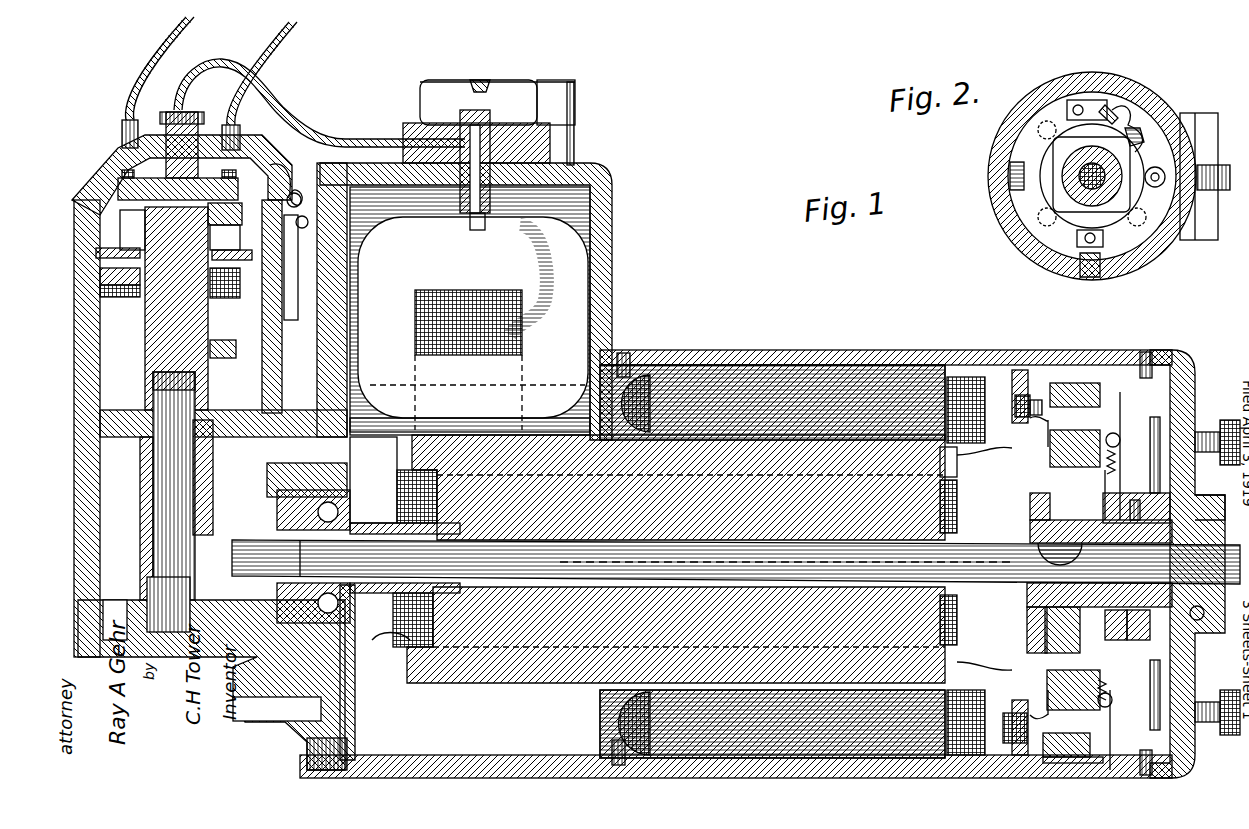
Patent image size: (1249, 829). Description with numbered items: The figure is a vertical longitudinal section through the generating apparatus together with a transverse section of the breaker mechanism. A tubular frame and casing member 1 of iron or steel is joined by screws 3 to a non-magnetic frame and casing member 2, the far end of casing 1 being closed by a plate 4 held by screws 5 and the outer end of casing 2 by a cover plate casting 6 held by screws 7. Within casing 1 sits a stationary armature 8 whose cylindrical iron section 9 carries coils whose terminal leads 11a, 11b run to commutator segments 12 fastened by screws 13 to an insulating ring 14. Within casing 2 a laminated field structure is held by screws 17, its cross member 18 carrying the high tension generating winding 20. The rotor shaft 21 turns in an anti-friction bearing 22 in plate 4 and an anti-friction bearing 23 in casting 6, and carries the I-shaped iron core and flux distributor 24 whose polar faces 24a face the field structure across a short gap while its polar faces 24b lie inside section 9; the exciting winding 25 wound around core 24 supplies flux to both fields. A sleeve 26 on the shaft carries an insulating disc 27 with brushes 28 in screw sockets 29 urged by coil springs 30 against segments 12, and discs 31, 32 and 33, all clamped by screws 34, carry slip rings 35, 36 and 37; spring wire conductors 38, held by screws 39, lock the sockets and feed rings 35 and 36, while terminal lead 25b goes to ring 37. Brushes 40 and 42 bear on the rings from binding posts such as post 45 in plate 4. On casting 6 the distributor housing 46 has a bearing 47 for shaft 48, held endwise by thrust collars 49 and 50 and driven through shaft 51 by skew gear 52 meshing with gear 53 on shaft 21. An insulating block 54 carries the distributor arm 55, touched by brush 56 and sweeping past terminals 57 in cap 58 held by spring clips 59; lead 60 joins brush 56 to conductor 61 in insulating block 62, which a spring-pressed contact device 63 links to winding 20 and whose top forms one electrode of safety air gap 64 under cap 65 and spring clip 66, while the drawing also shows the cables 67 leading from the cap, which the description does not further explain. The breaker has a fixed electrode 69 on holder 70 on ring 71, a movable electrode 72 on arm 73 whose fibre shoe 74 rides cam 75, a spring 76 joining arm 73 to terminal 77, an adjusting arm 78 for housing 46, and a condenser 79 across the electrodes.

In FIG. 1, the tubular frame and casing member 1 is at (876, 353).
In FIG. 1, the frame and casing member 2 is at (74, 192).
In FIG. 1, the screws 3 is at (624, 352).
In FIG. 1, the plate 4 is at (1180, 368).
In FIG. 1, the screws 5 is at (372, 165).
In FIG. 1, the cover plate casting 6 is at (316, 346).
In FIG. 1, the screws 7 is at (306, 755).
In FIG. 1, the stationary armature 8 is at (972, 724).
In FIG. 1, the cylindrical iron section 9 is at (738, 378).
In FIG. 1, the terminal lead 11a is at (1002, 437).
In FIG. 1, the terminal lead 11b is at (1002, 690).
In FIG. 1, the commutator segments 12 is at (1030, 392).
In FIG. 1, the screws 13 is at (1028, 410).
In FIG. 1, the ring 14 is at (1012, 737).
In FIG. 1, the screws 17 is at (394, 678).
In FIG. 1, the cross member 18 is at (414, 310).
In FIG. 1, the high tension generating winding 20 is at (470, 309).
In FIG. 1, the shaft 21 is at (266, 574).
In FIG. 1, the anti-friction bearing 22 is at (1197, 620).
In FIG. 1, the anti-friction bearing 23 is at (315, 512).
In FIG. 1, the iron core and flux distributor 24 is at (424, 688).
In FIG. 1, the polar faces 24a is at (460, 685).
In FIG. 1, the polar faces 24b is at (957, 570).
In FIG. 1, the exciting winding 25 is at (663, 577).
In FIG. 1, the terminal lead 25b is at (976, 565).
In FIG. 1, the sleeve 26 is at (715, 547).
In FIG. 1, the disc 27 is at (1073, 761).
In FIG. 1, the brushes 28 is at (1046, 694).
In FIG. 1, the screw sockets 29 is at (1118, 403).
In FIG. 1, the coil springs 30 is at (1065, 569).
In FIG. 1, the disc 31 is at (1136, 494).
In FIG. 1, the disc 32 is at (1139, 499).
In FIG. 1, the disc 33 is at (1182, 492).
In FIG. 1, the screws 34 is at (1040, 530).
In FIG. 1, the slip ring 35 is at (1112, 494).
In FIG. 1, the slip ring 36 is at (1122, 634).
In FIG. 1, the slip ring 37 is at (1143, 634).
In FIG. 1, the spring wire conductors 38 is at (1120, 430).
In FIG. 1, the screws 39 is at (1119, 572).
In FIG. 1, the brush 40 is at (1150, 686).
In FIG. 1, the brush 42 is at (1150, 464).
In FIG. 1, the terminal binding post 45 is at (1160, 442).
In FIG. 1, the housing 46 is at (270, 386).
In FIG. 2, the housing 46 is at (1066, 72).
In FIG. 1, the bearing 47 is at (118, 297).
In FIG. 1, the shaft 48 is at (190, 372).
In FIG. 2, the shaft 48 is at (1048, 186).
In FIG. 1, the thrust collar 49 is at (236, 294).
In FIG. 1, the thrust collar 50 is at (228, 352).
In FIG. 1, the shaft 51 is at (196, 462).
In FIG. 1, the skew gear 52 is at (130, 525).
In FIG. 1, the gear 53 is at (206, 500).
In FIG. 1, the insulating block 54 is at (226, 212).
In FIG. 2, the insulating block 54 is at (1072, 166).
In FIG. 1, the distributor arm 55 is at (166, 178).
In FIG. 1, the brush 56 is at (200, 168).
In FIG. 1, the terminals 57 is at (244, 179).
In FIG. 1, the cap 58 is at (116, 152).
In FIG. 1, the spring clips 59 is at (290, 160).
In FIG. 1, the lead 60 is at (292, 107).
In FIG. 1, the conductor 61 is at (462, 126).
In FIG. 1, the insulating block 62 is at (552, 143).
In FIG. 1, the spring-pressed contact device 63 is at (482, 222).
In FIG. 1, the safety air gap 64 is at (494, 103).
In FIG. 1, the cap 65 is at (542, 112).
In FIG. 1, the spring clip 66 is at (556, 78).
In FIG. 1, the cable 67 is at (306, 40).
In FIG. 2, the fixed electrode 69 is at (1112, 105).
In FIG. 2, the holder 70 is at (1085, 98).
In FIG. 1, the ring 71 is at (118, 252).
In FIG. 2, the ring 71 is at (1010, 178).
In FIG. 2, the movable electrode 72 is at (1128, 104).
In FIG. 1, the arm 73 is at (231, 239).
In FIG. 2, the arm 73 is at (1160, 130).
In FIG. 2, the fibre shoe 74 is at (1140, 128).
In FIG. 1, the actuating cam 75 is at (135, 232).
In FIG. 2, the actuating cam 75 is at (1058, 152).
In FIG. 2, the spring 76 is at (1122, 265).
In FIG. 2, the terminal 77 is at (1075, 240).
In FIG. 2, the arm 78 is at (1222, 195).
In FIG. 1, the condenser 79 is at (292, 320).
In FIG. 2, the condenser 79 is at (1204, 112).